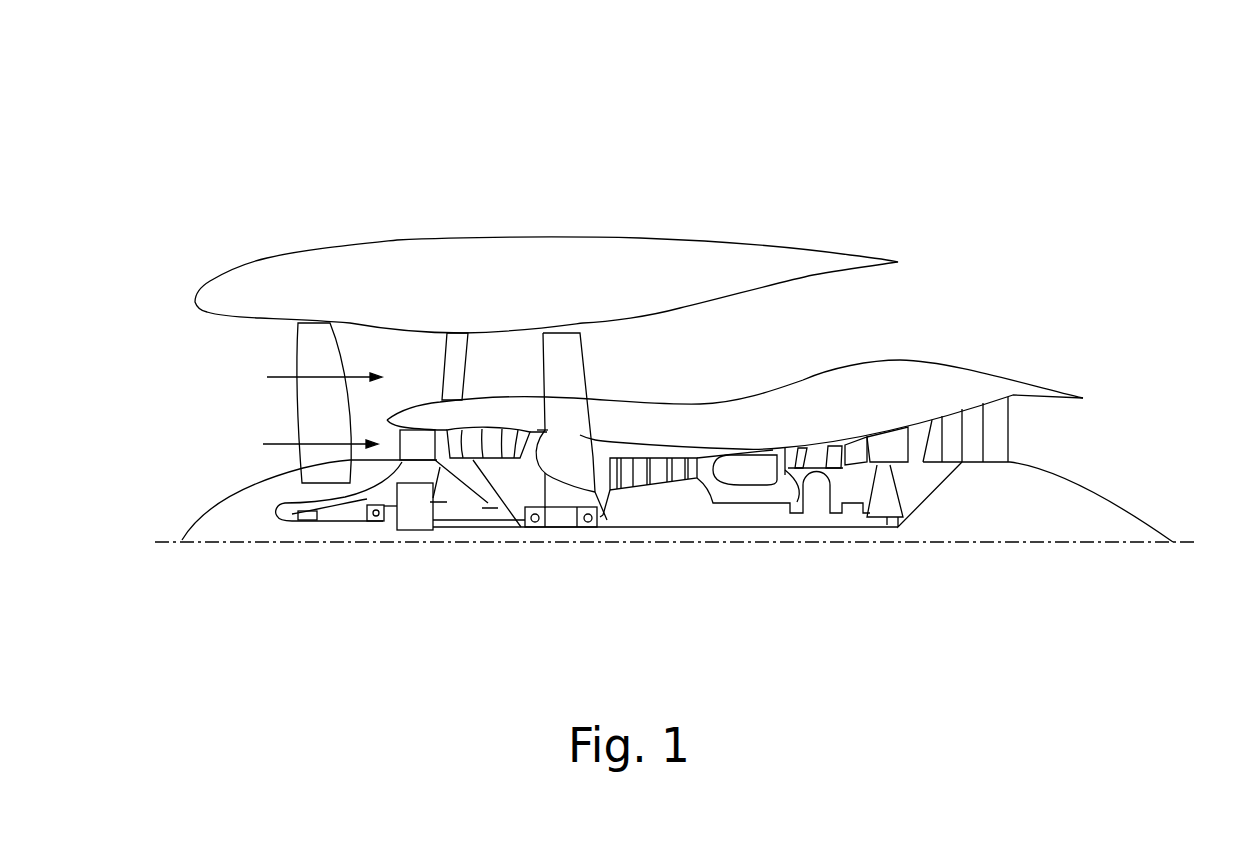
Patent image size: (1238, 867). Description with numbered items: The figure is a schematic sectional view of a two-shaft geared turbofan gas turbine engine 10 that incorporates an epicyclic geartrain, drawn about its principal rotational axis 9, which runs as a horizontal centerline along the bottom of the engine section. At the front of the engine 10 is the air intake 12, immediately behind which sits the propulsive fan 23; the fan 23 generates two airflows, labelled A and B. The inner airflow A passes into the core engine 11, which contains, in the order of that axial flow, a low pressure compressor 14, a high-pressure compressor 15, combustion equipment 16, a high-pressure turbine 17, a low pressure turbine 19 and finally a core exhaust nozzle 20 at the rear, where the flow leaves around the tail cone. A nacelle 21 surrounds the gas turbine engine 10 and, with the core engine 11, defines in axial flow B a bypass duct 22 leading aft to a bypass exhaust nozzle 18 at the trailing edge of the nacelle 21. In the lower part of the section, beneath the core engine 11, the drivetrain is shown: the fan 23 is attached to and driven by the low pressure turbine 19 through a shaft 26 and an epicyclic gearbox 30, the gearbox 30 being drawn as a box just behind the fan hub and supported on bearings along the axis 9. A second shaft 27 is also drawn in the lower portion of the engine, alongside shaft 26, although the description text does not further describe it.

The principal rotational axis 9 is at (1043, 543).
The gas turbine engine 10 is at (265, 256).
The core engine 11 is at (766, 420).
The air intake 12 is at (212, 341).
The low pressure compressor 14 is at (495, 440).
The high-pressure compressor 15 is at (663, 472).
The combustion equipment 16 is at (747, 473).
The high-pressure turbine 17 is at (822, 452).
The bypass exhaust nozzle 18 is at (1020, 258).
The low pressure turbine 19 is at (980, 447).
The core exhaust nozzle 20 is at (1095, 443).
The nacelle 21 is at (561, 254).
The bypass duct 22 is at (830, 311).
The propulsive fan 23 is at (307, 425).
The shaft 26 is at (622, 528).
The shaft 27 is at (697, 513).
The epicyclic gearbox 30 is at (415, 518).